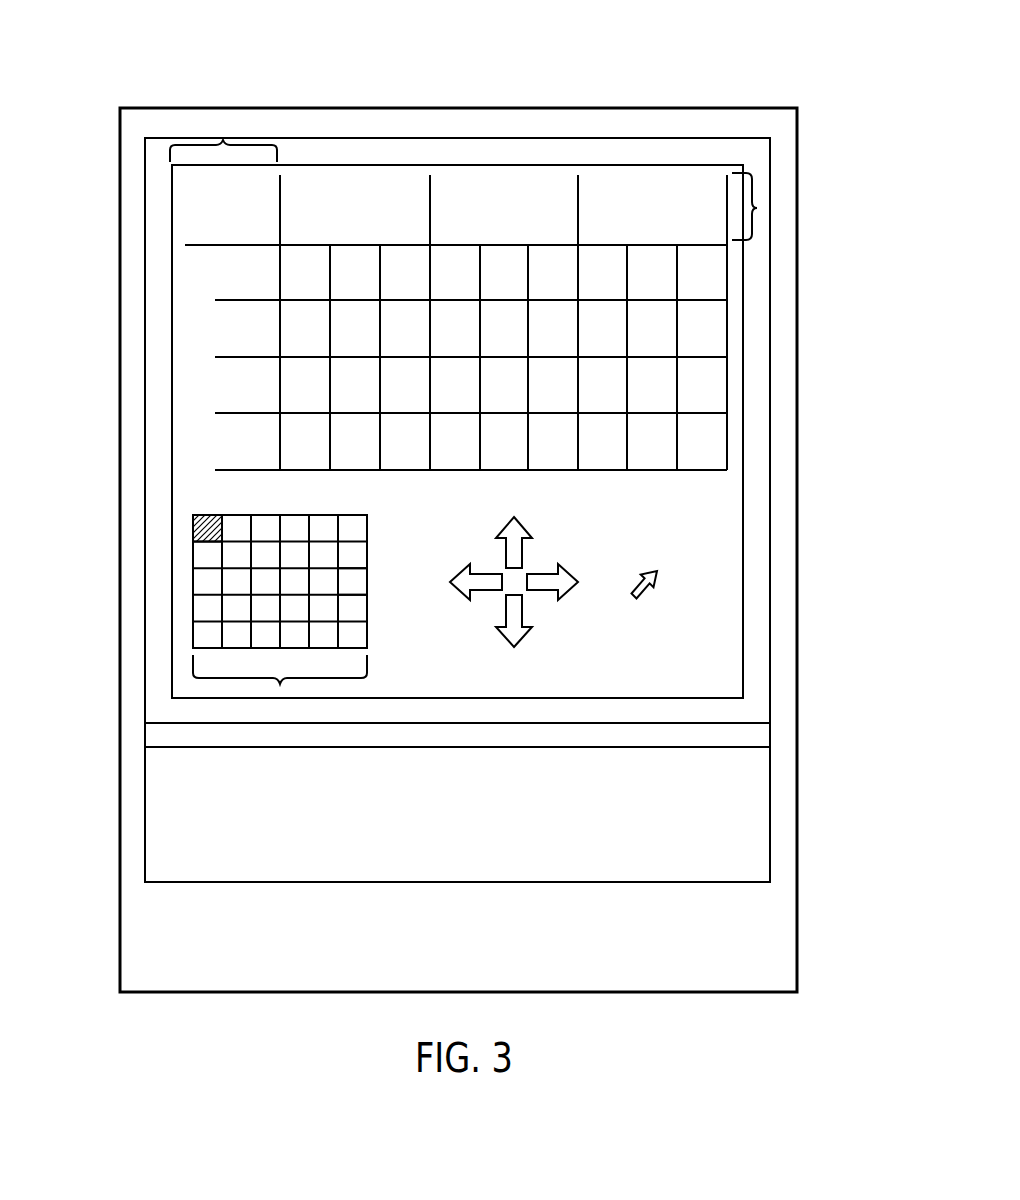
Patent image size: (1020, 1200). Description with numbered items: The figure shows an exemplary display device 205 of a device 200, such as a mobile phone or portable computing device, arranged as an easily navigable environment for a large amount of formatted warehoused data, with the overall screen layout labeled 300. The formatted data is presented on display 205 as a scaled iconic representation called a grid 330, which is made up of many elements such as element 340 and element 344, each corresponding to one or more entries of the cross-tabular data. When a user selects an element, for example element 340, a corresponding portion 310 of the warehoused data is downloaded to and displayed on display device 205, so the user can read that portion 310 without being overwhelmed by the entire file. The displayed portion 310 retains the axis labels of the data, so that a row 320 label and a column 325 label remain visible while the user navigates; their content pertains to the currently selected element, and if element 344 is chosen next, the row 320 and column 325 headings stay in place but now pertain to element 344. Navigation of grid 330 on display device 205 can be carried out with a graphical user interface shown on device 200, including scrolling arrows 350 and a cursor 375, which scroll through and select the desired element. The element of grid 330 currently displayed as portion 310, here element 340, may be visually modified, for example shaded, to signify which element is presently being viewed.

The device 200 is at (450, 967).
The display device 205 is at (707, 497).
The screen 300 is at (487, 32).
The portion 310 is at (728, 383).
The row 320 is at (757, 208).
The column 325 is at (223, 140).
The grid 330 is at (280, 684).
The element 340 is at (195, 527).
The element 344 is at (355, 578).
The scrolling arrows 350 is at (527, 636).
The cursor 375 is at (647, 607).